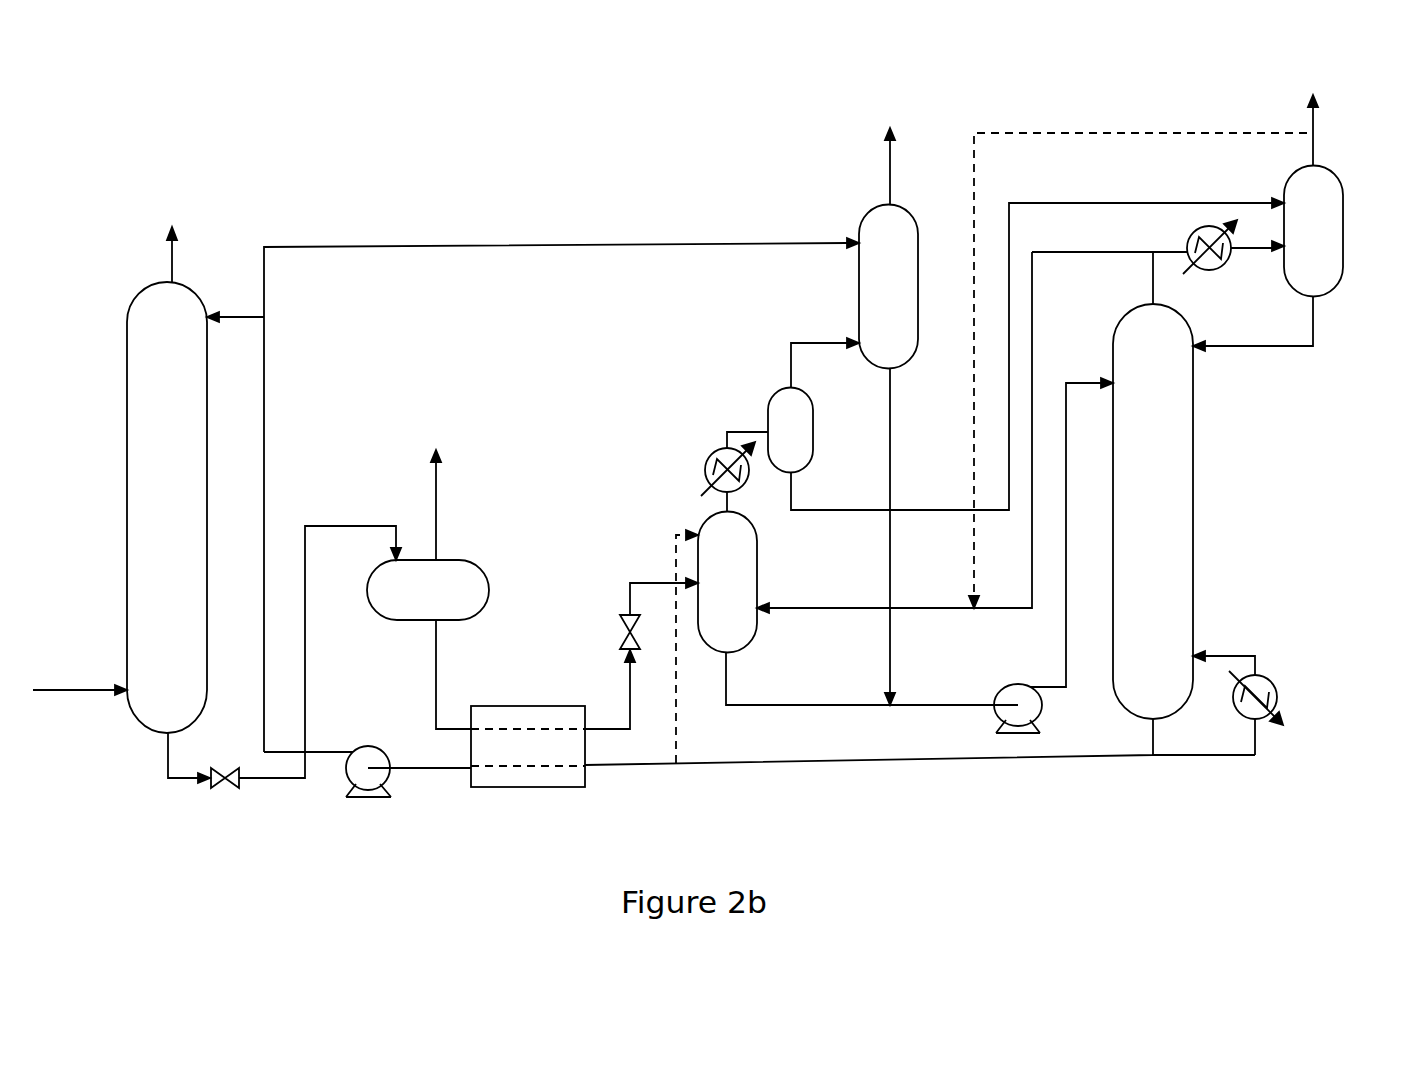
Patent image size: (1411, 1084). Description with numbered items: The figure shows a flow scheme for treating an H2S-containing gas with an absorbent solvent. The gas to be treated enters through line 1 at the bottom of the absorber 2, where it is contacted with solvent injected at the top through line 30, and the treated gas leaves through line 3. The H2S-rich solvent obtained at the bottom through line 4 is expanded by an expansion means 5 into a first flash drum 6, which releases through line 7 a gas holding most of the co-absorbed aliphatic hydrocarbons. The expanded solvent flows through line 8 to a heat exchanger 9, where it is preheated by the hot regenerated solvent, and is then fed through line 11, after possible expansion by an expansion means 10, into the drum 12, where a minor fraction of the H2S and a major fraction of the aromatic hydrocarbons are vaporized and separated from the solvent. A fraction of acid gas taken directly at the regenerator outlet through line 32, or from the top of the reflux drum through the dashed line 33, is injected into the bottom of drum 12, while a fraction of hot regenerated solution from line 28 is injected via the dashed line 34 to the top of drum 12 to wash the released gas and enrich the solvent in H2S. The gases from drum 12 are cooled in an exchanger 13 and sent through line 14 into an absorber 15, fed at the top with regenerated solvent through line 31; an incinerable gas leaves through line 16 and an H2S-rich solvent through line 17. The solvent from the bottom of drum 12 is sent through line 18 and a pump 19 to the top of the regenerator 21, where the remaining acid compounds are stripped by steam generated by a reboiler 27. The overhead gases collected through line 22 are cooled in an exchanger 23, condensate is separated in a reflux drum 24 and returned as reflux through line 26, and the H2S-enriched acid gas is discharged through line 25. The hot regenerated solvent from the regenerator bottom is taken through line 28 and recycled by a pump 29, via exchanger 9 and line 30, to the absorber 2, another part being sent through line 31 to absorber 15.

The gas feed line 1 is at (72, 690).
The absorber 2 is at (127, 425).
The treated gas line 3 is at (172, 262).
The rich solvent line 4 is at (178, 778).
The expansion means 5 is at (232, 790).
The first flash drum 6 is at (489, 578).
The flash gas line 7 is at (436, 522).
The expanded solvent line 8 is at (436, 677).
The heat exchanger 9 is at (540, 706).
The expansion means 10 is at (620, 632).
The preheated solvent line 11 is at (632, 583).
The flash drum 12 is at (757, 547).
The exchanger 13 is at (705, 470).
The gas line 14 is at (800, 343).
The absorber 15 is at (918, 230).
The incinerable gas line 16 is at (888, 172).
The rich solvent outlet line 17 is at (892, 445).
The solvent line 18 is at (826, 705).
The pump 19 is at (1040, 717).
The regenerator 21 is at (1193, 487).
The regenerator top gas line 22 is at (1150, 262).
The exchanger 23 is at (1207, 270).
The reflux drum 24 is at (1343, 228).
The acid gas line 25 is at (1318, 142).
The reflux line 26 is at (1265, 346).
The reboiler 27 is at (1277, 697).
The regenerated solvent line 28 is at (878, 758).
The pump 29 is at (378, 748).
The solvent injection line 30 is at (237, 320).
The solvent line 31 is at (520, 245).
The acid gas recycle line 32 is at (1035, 310).
The acid gas recycle line 33 is at (1092, 133).
The regenerated solution recycle line 34 is at (676, 740).